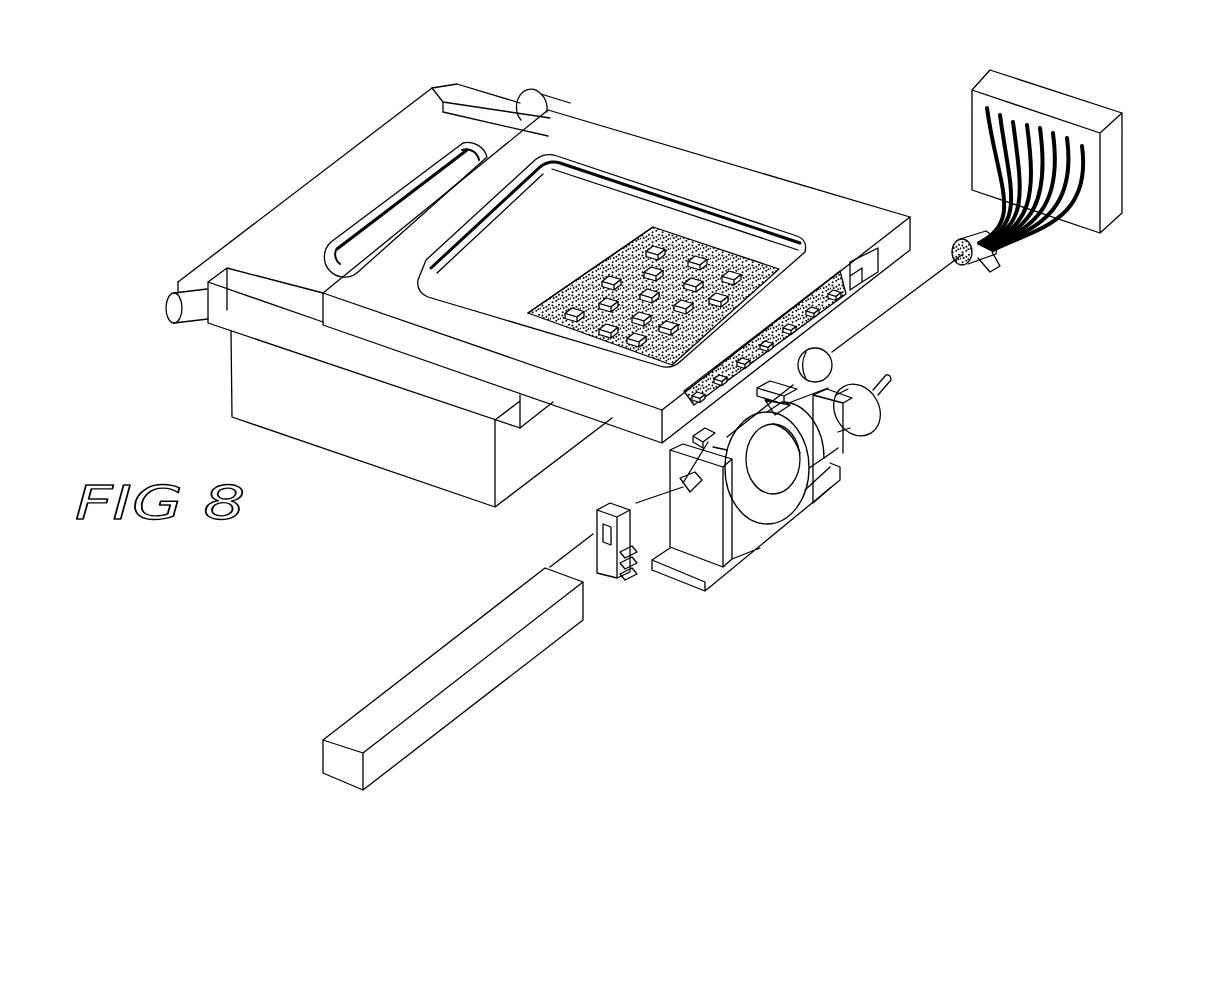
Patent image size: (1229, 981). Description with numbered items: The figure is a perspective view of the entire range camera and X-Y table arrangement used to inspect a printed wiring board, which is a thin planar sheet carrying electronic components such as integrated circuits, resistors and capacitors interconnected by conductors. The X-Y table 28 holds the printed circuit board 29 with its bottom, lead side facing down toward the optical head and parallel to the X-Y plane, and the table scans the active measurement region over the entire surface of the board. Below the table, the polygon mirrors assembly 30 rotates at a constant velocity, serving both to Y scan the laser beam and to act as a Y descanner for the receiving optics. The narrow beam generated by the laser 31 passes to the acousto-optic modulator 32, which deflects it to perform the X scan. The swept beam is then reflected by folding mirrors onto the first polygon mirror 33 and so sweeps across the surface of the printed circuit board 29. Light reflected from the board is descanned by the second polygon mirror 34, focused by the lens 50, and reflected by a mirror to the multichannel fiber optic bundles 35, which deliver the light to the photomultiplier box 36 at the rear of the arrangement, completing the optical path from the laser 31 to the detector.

The X-Y table 28 is at (393, 177).
The printed circuit board 29 is at (840, 303).
The polygon mirrors assembly 30 is at (921, 510).
The laser 31 is at (463, 632).
The acousto-optic modulator 32 is at (610, 577).
The first polygon mirror 33 is at (743, 513).
The second polygon mirror 34 is at (812, 458).
The multichannel fiber optic bundles 35 is at (980, 260).
The photomultiplier box 36 is at (972, 104).
The lens 50 is at (832, 362).